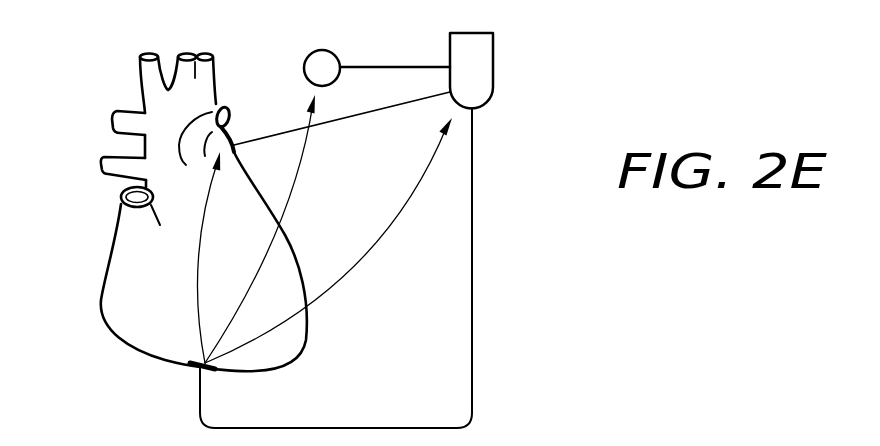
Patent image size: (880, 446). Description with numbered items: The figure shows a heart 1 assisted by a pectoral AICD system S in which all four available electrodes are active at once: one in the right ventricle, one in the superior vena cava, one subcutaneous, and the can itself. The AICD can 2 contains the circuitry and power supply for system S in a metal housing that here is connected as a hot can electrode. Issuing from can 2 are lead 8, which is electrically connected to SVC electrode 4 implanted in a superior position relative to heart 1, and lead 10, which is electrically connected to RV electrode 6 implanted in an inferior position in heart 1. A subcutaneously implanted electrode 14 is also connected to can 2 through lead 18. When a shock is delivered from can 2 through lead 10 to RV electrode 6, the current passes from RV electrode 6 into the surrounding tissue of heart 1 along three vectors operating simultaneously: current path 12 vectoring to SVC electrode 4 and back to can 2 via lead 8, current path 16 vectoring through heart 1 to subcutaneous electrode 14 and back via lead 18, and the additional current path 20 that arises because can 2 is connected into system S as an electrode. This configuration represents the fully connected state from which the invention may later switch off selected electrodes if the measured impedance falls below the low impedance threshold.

The heart 1 is at (75, 218).
The AICD can 2 is at (493, 63).
The SVC electrode 4 is at (235, 153).
The RV electrode 6 is at (193, 366).
The lead 8 is at (382, 111).
The lead 10 is at (473, 245).
The current path 12 is at (198, 277).
The subcutaneous electrode 14 is at (304, 67).
The current path 16 is at (292, 187).
The lead 18 is at (378, 66).
The current path 20 is at (347, 268).
The AICD system S is at (500, 384).